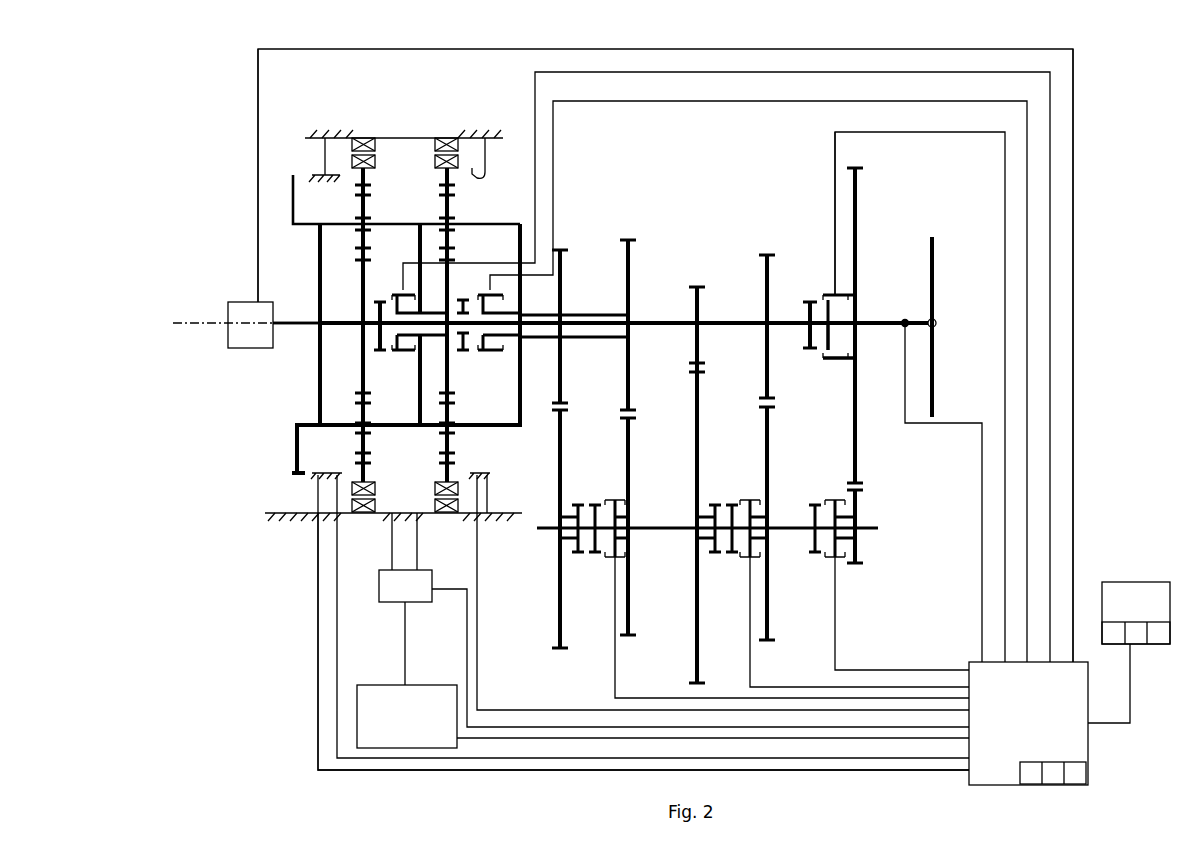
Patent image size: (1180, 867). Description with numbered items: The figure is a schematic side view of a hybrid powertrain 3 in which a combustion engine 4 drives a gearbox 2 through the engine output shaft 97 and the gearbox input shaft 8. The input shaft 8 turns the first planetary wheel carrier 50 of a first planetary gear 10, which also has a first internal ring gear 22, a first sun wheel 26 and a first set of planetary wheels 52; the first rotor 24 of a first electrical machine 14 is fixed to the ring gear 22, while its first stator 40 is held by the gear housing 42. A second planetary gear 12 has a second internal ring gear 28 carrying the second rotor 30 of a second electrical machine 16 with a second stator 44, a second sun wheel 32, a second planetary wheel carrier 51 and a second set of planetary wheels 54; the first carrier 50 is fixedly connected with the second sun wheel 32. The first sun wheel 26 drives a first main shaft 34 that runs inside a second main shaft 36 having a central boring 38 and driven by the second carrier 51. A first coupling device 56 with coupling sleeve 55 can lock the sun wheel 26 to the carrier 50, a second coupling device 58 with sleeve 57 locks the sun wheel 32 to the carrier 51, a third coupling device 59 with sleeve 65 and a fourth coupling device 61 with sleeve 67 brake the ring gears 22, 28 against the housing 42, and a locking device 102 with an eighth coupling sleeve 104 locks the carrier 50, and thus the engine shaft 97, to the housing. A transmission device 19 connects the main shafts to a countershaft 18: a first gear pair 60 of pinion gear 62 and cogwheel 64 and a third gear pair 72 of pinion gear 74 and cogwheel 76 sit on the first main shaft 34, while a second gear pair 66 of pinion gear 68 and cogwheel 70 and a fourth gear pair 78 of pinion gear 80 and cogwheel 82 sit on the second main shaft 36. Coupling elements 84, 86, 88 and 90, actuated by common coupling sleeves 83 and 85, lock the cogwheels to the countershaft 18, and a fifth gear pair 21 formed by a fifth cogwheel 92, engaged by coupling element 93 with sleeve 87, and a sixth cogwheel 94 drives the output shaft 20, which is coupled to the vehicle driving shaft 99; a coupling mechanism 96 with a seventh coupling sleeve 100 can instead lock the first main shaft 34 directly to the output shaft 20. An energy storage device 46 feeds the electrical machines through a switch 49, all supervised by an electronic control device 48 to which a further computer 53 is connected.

The gearbox 2 is at (1090, 117).
The hybrid powertrain 3 is at (303, 590).
The combustion engine 4 is at (234, 302).
The input shaft 8 is at (302, 322).
The first planetary gear 10 is at (243, 188).
The second planetary gear 12 is at (556, 174).
The first electrical machine 14 is at (246, 122).
The second electrical machine 16 is at (509, 158).
The countershaft 18 is at (682, 534).
The transmission device 19 is at (696, 190).
The output shaft 20 is at (876, 314).
The fifth gear pair 21 is at (892, 486).
The first internal ring gear 22 is at (361, 190).
The first rotor 24 is at (377, 151).
The first sun wheel 26 is at (358, 350).
The second internal ring gear 28 is at (452, 192).
The second rotor 30 is at (432, 152).
The second sun wheel 32 is at (427, 296).
The first main shaft 34 is at (730, 319).
The second main shaft 36 is at (554, 350).
The central boring 38 is at (636, 318).
The first stator 40 is at (344, 136).
The gear housing 42 is at (432, 136).
The second stator 44 is at (484, 138).
The energy storage device 46 is at (426, 682).
The electronic control device 48 is at (970, 658).
The switch 49 is at (394, 620).
The first planetary wheel carrier 50 is at (335, 228).
The second planetary wheel carrier 51 is at (528, 404).
The first set of planetary wheels 52 is at (372, 254).
The computer 53 is at (1134, 582).
The second set of planetary wheels 54 is at (464, 254).
The first coupling sleeve 55 is at (401, 356).
The first coupling device 56 is at (378, 304).
The second coupling sleeve 57 is at (490, 356).
The second coupling device 58 is at (502, 303).
The third coupling device 59 is at (358, 472).
The first gear pair 60 is at (698, 264).
The fourth coupling device 61 is at (458, 480).
The first pinion gear 62 is at (700, 356).
The first cogwheel 64 is at (702, 409).
The third coupling sleeve 65 is at (329, 471).
The second gear pair 66 is at (631, 220).
The fourth coupling sleeve 67 is at (486, 484).
The second pinion gear 68 is at (630, 370).
The second cogwheel 70 is at (632, 446).
The third gear pair 72 is at (769, 229).
The third pinion gear 74 is at (768, 359).
The third cogwheel 76 is at (767, 448).
The fourth gear pair 78 is at (566, 222).
The fourth pinion gear 80 is at (564, 368).
The fourth cogwheel 82 is at (570, 472).
The fifth coupling sleeve 83 is at (750, 500).
The first coupling element 84 is at (715, 552).
The sixth coupling sleeve 85 is at (618, 497).
The second coupling element 86 is at (618, 554).
The ninth coupling sleeve 87 is at (832, 495).
The third coupling element 88 is at (760, 554).
The fourth coupling element 90 is at (584, 560).
The fifth cogwheel 92 is at (860, 500).
The fifth coupling element 93 is at (852, 550).
The sixth cogwheel 94 is at (862, 414).
The coupling mechanism 96 is at (804, 264).
The output shaft 97 is at (290, 345).
The driving shaft 99 is at (936, 322).
The seventh coupling sleeve 100 is at (840, 362).
The locking device 102 is at (290, 476).
The eighth coupling sleeve 104 is at (307, 488).